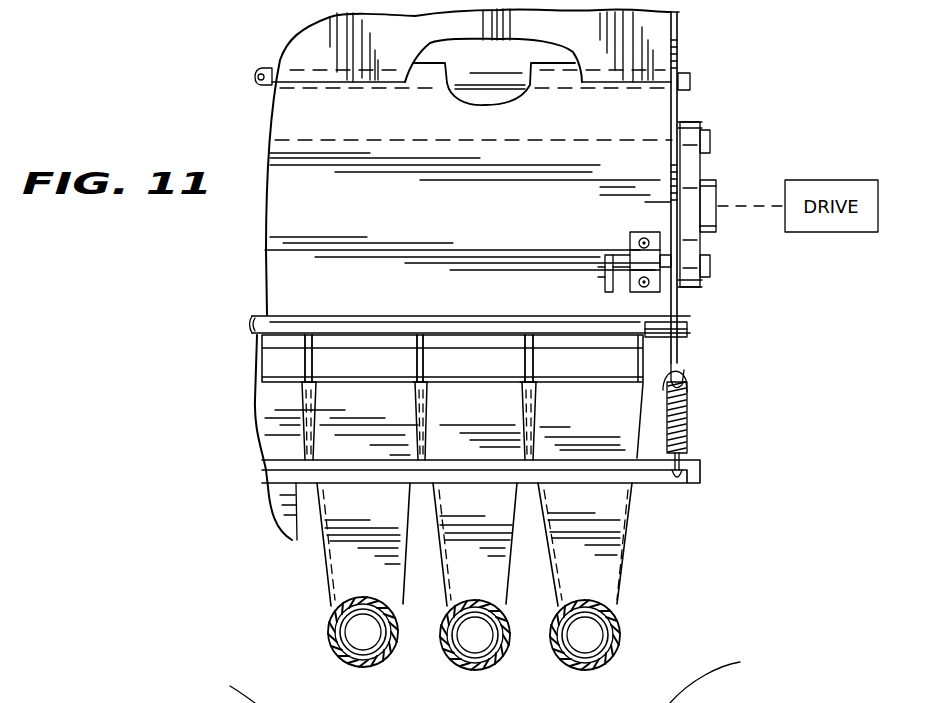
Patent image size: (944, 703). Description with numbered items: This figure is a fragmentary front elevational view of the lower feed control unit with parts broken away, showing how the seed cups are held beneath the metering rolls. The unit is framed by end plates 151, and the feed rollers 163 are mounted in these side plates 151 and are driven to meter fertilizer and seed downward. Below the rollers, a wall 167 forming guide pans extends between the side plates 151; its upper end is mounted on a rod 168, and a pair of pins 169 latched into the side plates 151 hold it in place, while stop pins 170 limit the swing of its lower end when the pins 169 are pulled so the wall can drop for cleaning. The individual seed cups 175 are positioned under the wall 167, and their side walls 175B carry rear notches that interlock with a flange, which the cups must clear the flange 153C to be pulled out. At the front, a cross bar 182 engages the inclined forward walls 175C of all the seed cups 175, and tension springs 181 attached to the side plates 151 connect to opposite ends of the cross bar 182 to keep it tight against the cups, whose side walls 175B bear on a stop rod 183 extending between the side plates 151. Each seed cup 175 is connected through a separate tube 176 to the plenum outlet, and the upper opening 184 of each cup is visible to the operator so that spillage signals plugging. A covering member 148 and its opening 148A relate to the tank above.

The member 148 is at (727, 677).
The conveyor 148A is at (212, 679).
The end plates 151 is at (681, 30).
The flange 153C is at (457, 347).
The feed rollers 163 is at (697, 120).
The wall 167 is at (280, 215).
The rod 168 is at (267, 68).
The pins 169 is at (612, 252).
The stop pins 170 is at (690, 330).
The seed cups 175 is at (613, 558).
The side walls 175B is at (403, 362).
The inclined forward walls 175C is at (353, 540).
The tube 176 is at (512, 653).
The tension springs 181 is at (688, 411).
The cross bar 182 is at (700, 485).
The stop rod 183 is at (288, 318).
The upper opening 184 is at (550, 383).